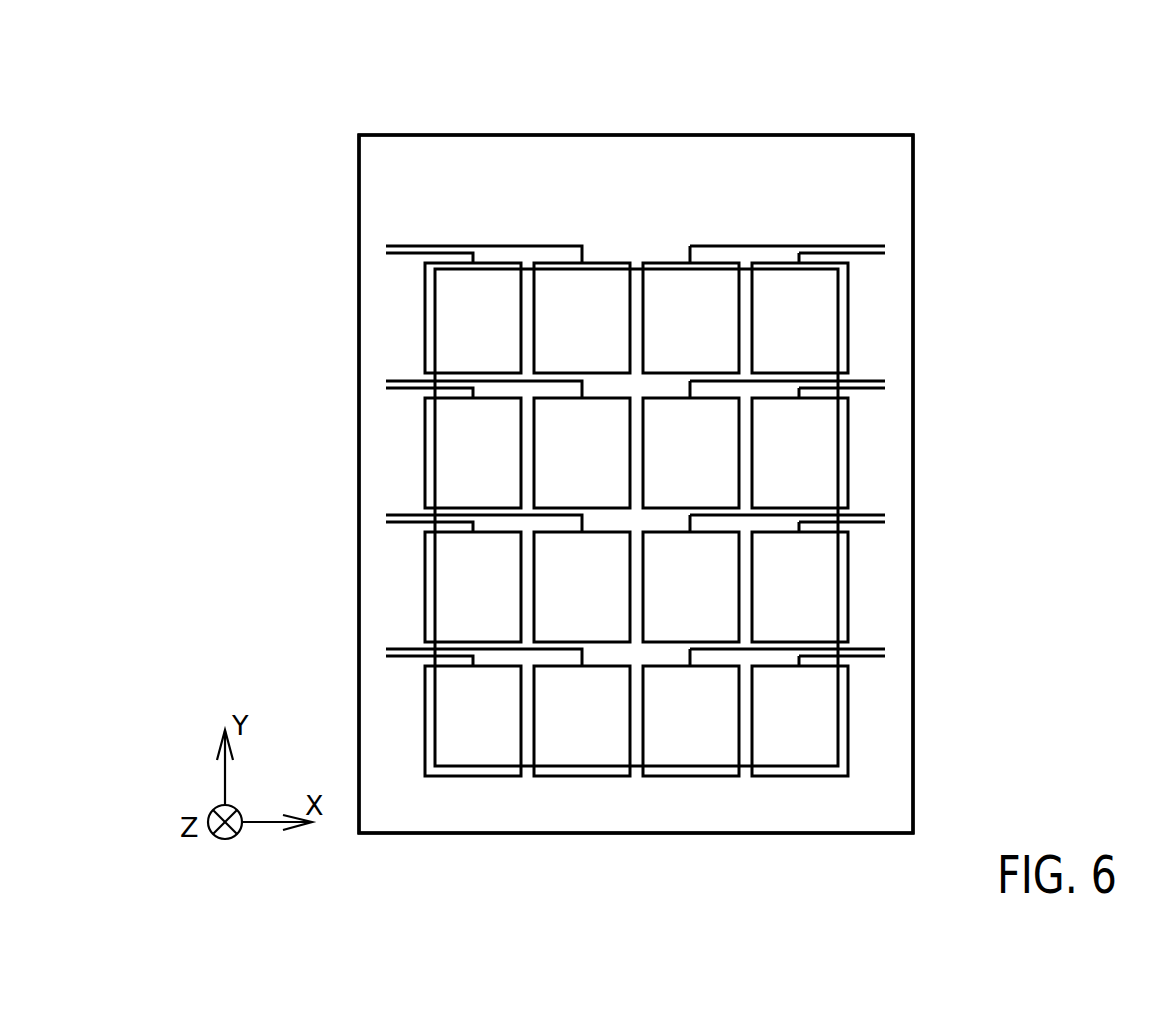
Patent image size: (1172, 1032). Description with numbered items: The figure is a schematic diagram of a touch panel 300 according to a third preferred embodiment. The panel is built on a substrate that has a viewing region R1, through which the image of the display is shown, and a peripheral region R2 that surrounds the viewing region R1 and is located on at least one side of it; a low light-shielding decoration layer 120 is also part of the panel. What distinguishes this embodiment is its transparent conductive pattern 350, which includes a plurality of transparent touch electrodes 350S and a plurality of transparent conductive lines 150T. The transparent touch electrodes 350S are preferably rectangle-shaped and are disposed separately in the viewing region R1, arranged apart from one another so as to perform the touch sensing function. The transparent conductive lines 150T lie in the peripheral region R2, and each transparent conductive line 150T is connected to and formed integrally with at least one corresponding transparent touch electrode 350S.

The touch panel 300 is at (943, 100).
The low light-shielding decoration layer 120 is at (895, 760).
The viewing region R1 is at (633, 270).
The peripheral region R2 is at (913, 689).
The transparent conductive pattern 350 is at (634, 511).
The transparent touch electrode 350S is at (460, 303).
The transparent conductive line 150T is at (404, 254).